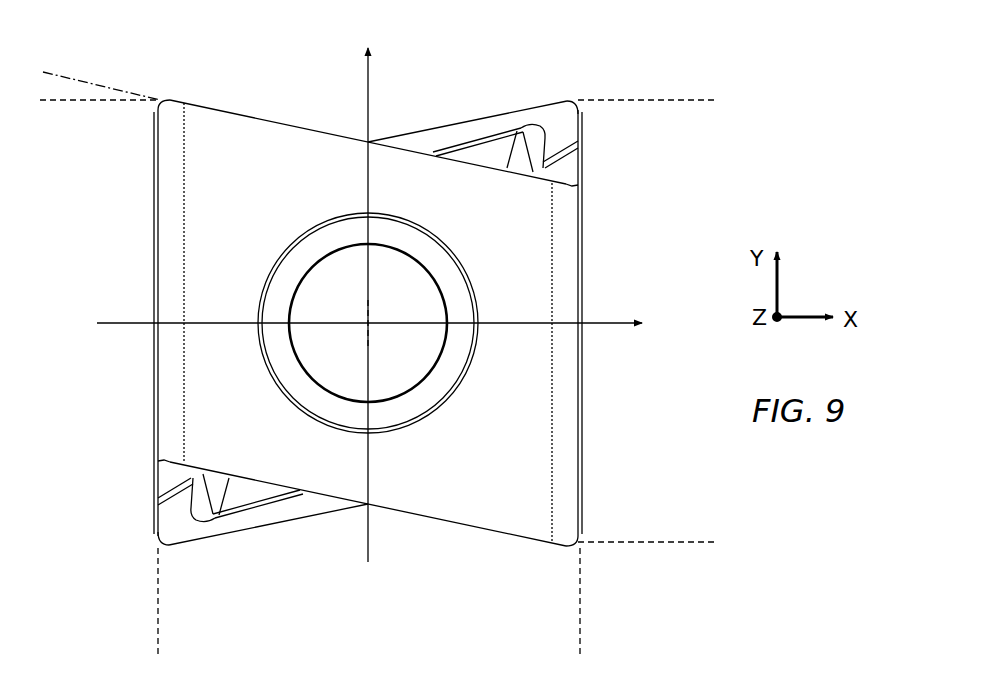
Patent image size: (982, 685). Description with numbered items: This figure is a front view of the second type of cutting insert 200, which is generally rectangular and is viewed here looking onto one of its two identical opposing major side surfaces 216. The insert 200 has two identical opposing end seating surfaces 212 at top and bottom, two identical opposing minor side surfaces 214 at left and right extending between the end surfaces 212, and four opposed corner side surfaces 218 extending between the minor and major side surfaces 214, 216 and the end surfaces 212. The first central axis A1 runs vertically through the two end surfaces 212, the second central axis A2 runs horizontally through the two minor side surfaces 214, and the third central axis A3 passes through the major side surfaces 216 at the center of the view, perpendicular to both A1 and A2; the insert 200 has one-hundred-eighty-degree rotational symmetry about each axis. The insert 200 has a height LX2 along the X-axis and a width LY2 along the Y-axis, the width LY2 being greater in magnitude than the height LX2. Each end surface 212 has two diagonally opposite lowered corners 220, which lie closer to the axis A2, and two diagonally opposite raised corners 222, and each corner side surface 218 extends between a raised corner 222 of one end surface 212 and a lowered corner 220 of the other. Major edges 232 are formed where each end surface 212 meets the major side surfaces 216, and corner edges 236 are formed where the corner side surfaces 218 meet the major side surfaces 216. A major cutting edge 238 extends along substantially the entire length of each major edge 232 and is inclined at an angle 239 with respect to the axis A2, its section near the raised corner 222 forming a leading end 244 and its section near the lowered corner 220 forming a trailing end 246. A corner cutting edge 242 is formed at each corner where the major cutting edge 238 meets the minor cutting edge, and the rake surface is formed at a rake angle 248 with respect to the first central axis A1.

The cutting insert 200 is at (718, 57).
The end seating surface 212 is at (420, 121).
The minor side surface 214 is at (147, 186).
The major side surface 216 is at (466, 485).
The corner side surface 218 is at (181, 397).
The lowered corner 220 is at (585, 182).
The raised corner 222 is at (163, 95).
The major edge 232 is at (247, 105).
The corner edge 236 is at (183, 270).
The major cutting edge 238 is at (263, 116).
The angle 239 is at (70, 42).
The corner cutting edge 242 is at (170, 98).
The leading end 244 is at (198, 100).
The trailing end 246 is at (443, 150).
The rake angle 248 is at (261, 480).
The first central axis A1 is at (371, 288).
The second central axis A2 is at (388, 323).
The third central axis A3 is at (369, 316).
The length along the X-axis LX2 is at (159, 639).
The length along the Y-axis LY2 is at (707, 541).